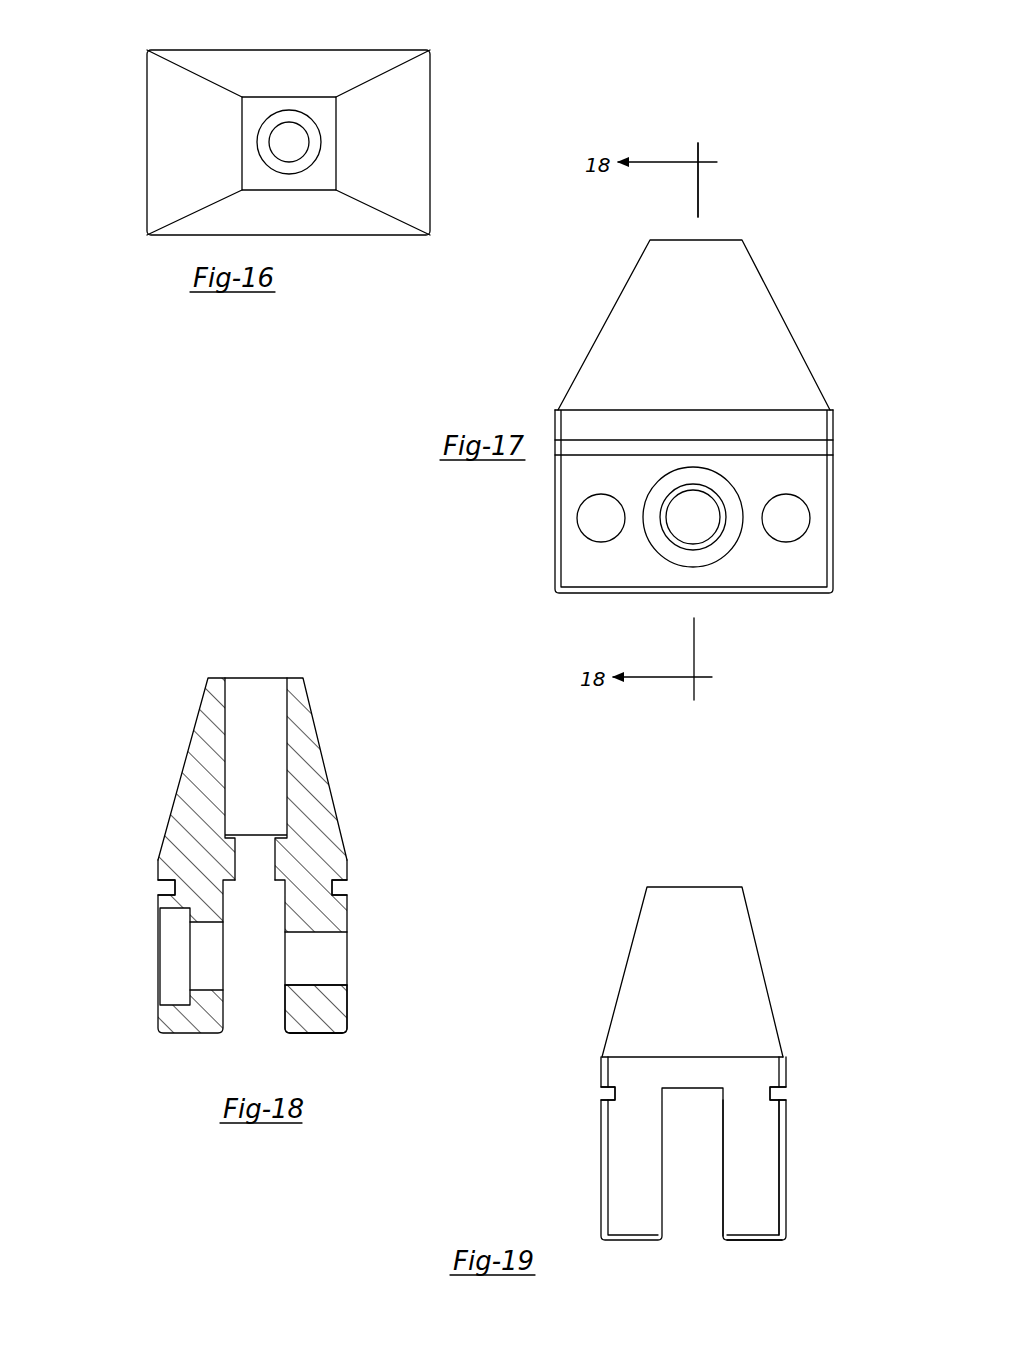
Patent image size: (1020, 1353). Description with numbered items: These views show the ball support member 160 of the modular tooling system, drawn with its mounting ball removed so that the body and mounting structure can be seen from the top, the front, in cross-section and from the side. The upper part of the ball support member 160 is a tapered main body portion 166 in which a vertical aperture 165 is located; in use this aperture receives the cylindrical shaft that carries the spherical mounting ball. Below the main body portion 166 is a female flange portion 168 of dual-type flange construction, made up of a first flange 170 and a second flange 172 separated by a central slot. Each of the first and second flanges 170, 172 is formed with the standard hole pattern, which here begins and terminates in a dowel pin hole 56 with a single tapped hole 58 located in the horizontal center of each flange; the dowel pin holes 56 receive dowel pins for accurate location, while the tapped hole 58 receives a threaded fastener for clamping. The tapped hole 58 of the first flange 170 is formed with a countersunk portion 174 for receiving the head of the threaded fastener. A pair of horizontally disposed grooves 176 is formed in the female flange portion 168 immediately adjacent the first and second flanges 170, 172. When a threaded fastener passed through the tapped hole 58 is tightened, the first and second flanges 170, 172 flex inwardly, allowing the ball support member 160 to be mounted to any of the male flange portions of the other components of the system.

In FIG. 16, the ball support member 160 is at (278, 119).
In FIG. 17, the ball support member 160 is at (684, 452).
In FIG. 18, the ball support member 160 is at (260, 841).
In FIG. 19, the ball support member 160 is at (689, 1072).
In FIG. 16, the vertical aperture 165 is at (294, 137).
In FIG. 18, the vertical aperture 165 is at (287, 712).
In FIG. 16, the main body portion 166 is at (398, 132).
In FIG. 17, the main body portion 166 is at (770, 387).
In FIG. 18, the main body portion 166 is at (317, 813).
In FIG. 19, the main body portion 166 is at (740, 973).
In FIG. 17, the dowel pin holes 56 is at (810, 510).
In FIG. 17, the tapped holes 58 is at (725, 545).
In FIG. 18, the tapped holes 58 is at (337, 943).
In FIG. 17, the first flange 170 is at (788, 563).
In FIG. 18, the first flange 170 is at (177, 1022).
In FIG. 19, the first flange 170 is at (618, 1158).
In FIG. 18, the second flange 172 is at (335, 1000).
In FIG. 19, the second flange 172 is at (765, 1177).
In FIG. 18, the countersunk portion 174 is at (172, 918).
In FIG. 18, the horizontally disposed grooves 176 is at (173, 883).
In FIG. 19, the horizontally disposed grooves 176 is at (608, 1092).
In FIG. 18, the female flange portion 168 is at (333, 1040).
In FIG. 19, the female flange portion 168 is at (778, 1248).